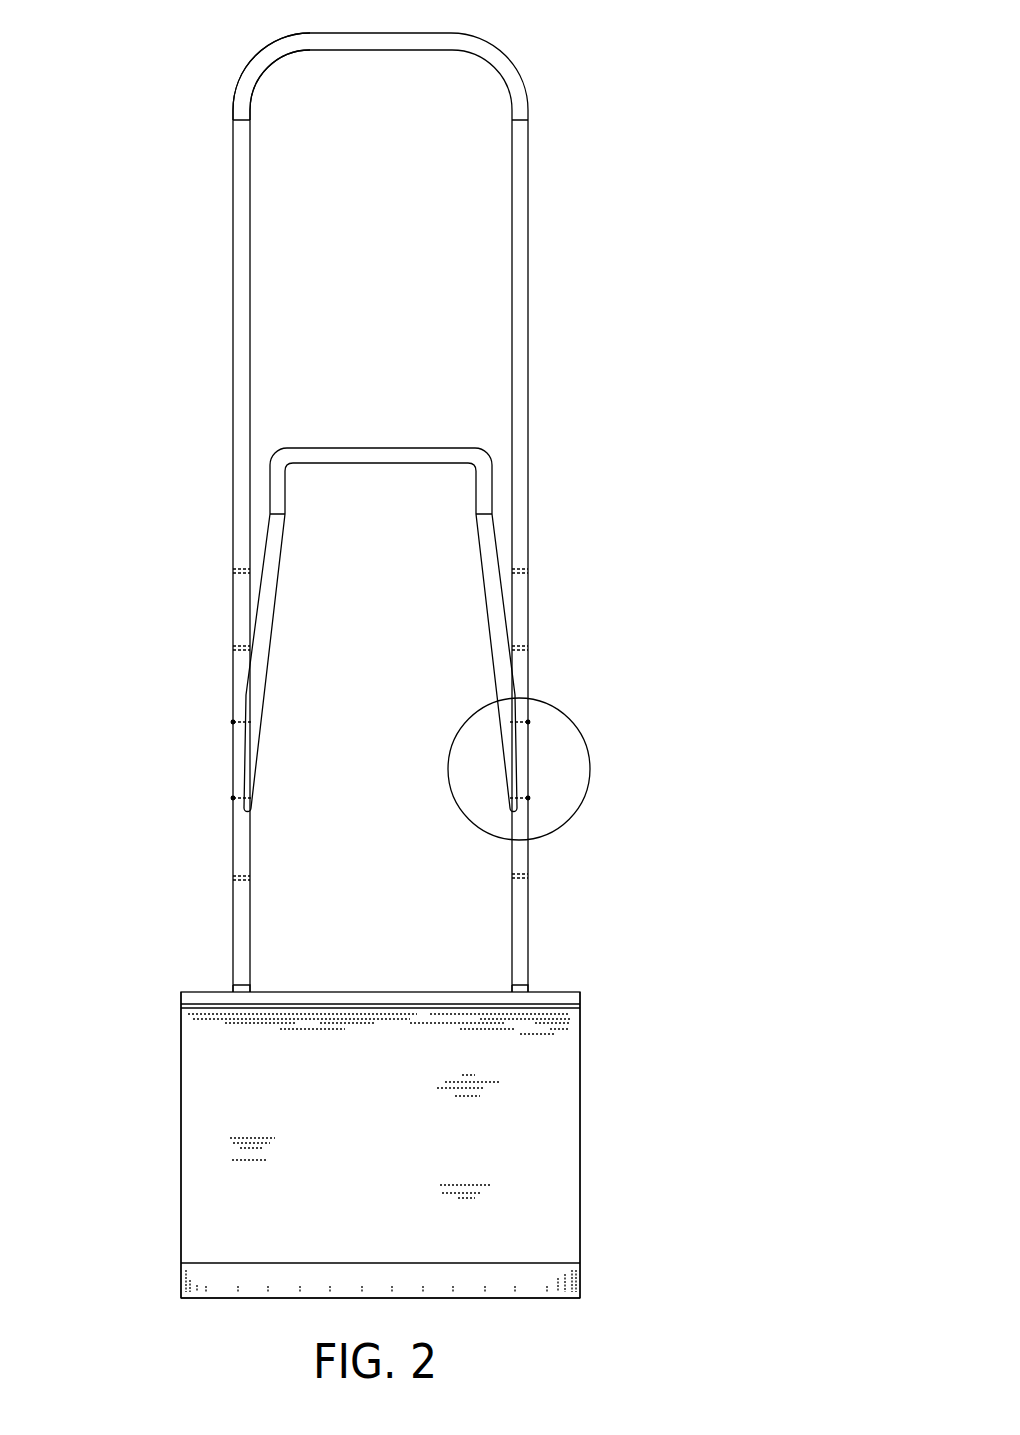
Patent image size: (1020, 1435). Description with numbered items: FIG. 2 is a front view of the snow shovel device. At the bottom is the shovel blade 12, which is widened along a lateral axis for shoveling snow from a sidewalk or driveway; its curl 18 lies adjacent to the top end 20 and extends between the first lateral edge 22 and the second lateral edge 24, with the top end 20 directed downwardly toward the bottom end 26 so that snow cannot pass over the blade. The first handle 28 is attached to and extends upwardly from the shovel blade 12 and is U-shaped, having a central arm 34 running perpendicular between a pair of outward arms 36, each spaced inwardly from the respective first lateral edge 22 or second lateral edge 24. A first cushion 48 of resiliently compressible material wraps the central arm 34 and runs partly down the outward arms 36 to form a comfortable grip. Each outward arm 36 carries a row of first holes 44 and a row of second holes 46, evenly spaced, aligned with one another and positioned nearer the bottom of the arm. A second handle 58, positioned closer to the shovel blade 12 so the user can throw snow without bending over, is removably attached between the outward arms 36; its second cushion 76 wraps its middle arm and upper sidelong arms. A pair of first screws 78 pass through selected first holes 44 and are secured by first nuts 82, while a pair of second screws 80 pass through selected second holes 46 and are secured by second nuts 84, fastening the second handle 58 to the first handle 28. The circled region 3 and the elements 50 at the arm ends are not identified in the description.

The shovel blade 12 is at (140, 1081).
The curl 18 is at (373, 1125).
The top end 20 is at (533, 1008).
The first lateral edge 22 is at (181, 1212).
The second lateral edge 24 is at (580, 1218).
The bottom end 26 is at (515, 1298).
The first handle 28 is at (344, 498).
The detail circle of FIG. 3 is at (571, 718).
The central arm 34 is at (347, 40).
The outward arms 36 is at (233, 311).
The first holes 44 is at (210, 578).
The second holes 46 is at (558, 572).
The first cushion 48 is at (258, 76).
The handle mounting bracket 50 is at (236, 988).
The second handle 58 is at (362, 584).
The second cushion 76 is at (299, 462).
The first screws 78 is at (233, 722).
The second screws 80 is at (517, 720).
The first nuts 82 is at (233, 722).
The second nuts 84 is at (528, 723).